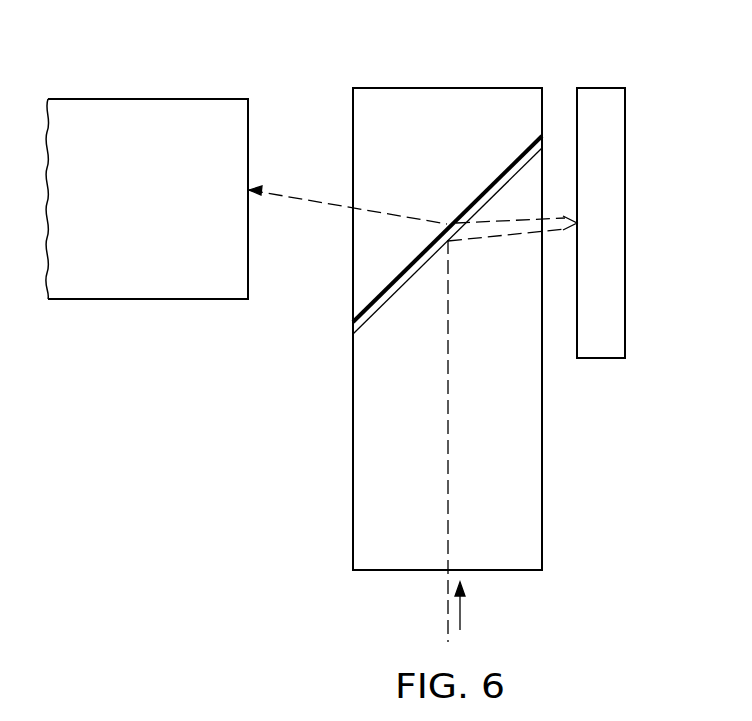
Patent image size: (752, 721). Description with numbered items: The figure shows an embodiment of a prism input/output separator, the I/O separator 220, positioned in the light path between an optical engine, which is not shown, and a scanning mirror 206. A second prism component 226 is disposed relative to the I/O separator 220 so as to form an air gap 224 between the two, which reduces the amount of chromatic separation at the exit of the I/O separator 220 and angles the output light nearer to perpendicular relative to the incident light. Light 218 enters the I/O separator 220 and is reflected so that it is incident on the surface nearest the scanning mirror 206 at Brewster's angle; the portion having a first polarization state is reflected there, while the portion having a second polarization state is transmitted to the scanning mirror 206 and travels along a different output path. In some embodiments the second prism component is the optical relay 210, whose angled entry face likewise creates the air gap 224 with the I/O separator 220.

The scanning mirror 206 is at (626, 210).
The optical relay 210 is at (172, 217).
The light 218 is at (445, 610).
The I/O separator 220 is at (353, 452).
The air gap 224 is at (352, 330).
The second prism component 226 is at (447, 87).